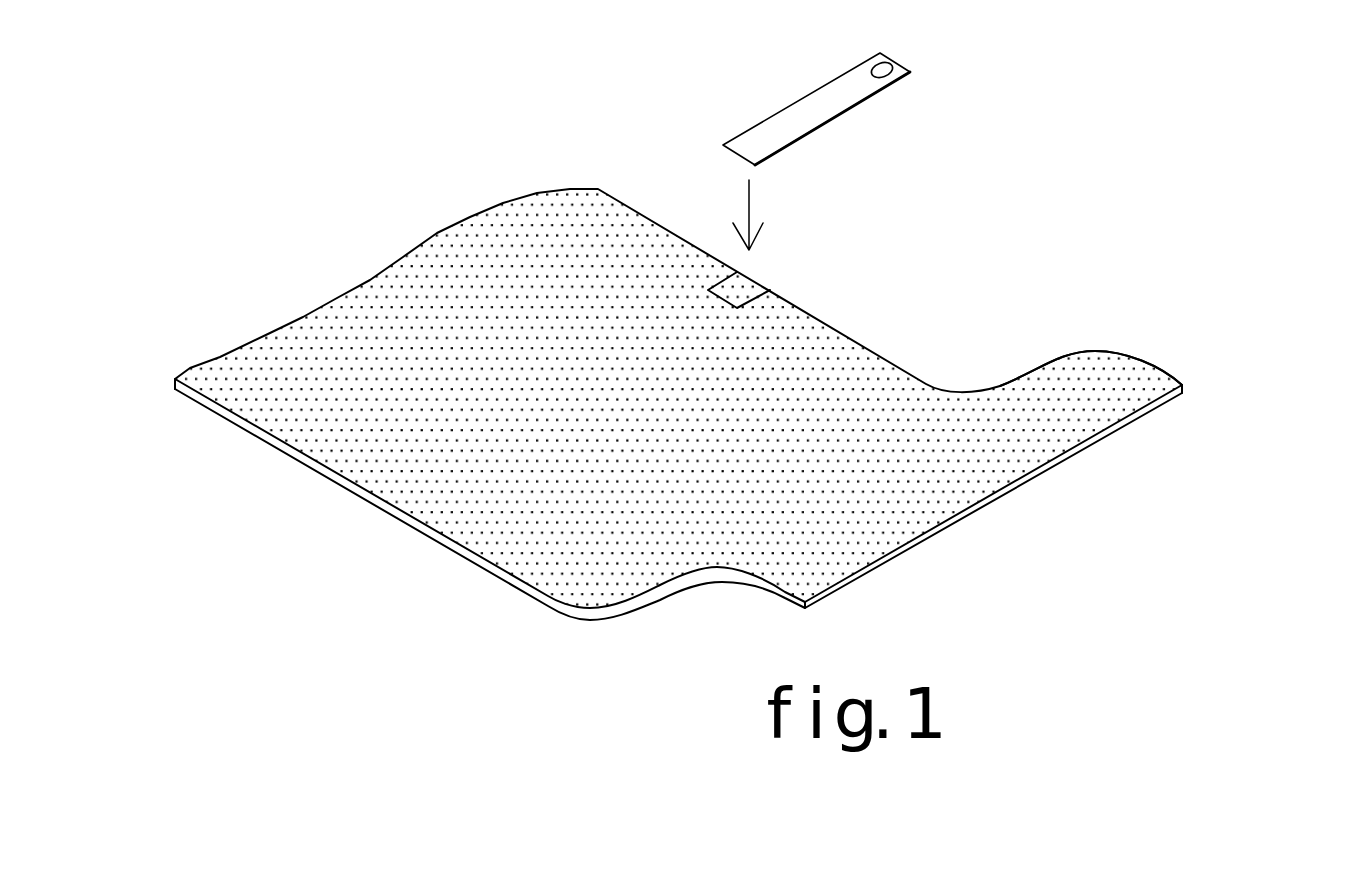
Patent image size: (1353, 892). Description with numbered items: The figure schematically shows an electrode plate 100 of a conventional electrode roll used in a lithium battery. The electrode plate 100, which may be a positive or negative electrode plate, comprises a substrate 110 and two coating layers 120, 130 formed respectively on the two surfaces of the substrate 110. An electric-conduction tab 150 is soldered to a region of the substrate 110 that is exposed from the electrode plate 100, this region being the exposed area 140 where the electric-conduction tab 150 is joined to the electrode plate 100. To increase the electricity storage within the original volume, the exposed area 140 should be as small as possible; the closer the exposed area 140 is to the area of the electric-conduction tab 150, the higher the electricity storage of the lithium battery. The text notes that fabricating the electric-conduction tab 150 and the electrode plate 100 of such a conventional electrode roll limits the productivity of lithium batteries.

The electrode plate 100 is at (273, 207).
The substrate 110 is at (1183, 390).
The coating layer 120 is at (1102, 375).
The coating layer 130 is at (1120, 430).
The exposed area 140 is at (755, 287).
The electric-conduction tab 150 is at (843, 102).